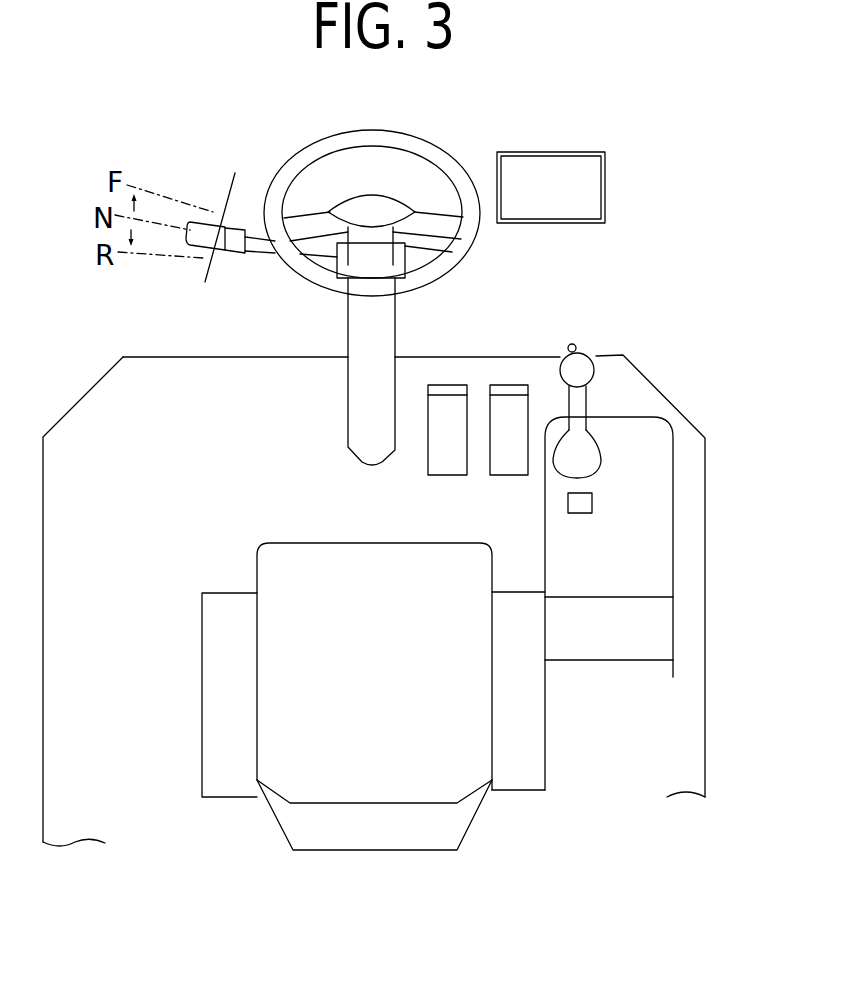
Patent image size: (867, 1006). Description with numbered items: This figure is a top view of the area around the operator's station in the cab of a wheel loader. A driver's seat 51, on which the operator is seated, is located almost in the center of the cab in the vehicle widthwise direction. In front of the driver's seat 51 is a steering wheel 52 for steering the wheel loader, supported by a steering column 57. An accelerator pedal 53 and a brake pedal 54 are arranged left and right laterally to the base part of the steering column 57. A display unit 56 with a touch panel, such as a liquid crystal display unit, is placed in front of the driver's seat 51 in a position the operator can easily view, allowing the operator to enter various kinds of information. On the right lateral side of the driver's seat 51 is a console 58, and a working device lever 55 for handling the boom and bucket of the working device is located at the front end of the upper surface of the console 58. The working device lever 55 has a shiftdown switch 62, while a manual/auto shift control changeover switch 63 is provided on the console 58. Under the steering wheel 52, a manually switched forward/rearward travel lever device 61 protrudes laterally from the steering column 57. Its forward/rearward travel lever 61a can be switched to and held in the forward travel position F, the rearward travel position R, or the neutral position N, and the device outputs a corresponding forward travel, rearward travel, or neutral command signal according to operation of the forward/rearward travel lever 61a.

The driver's seat 51 is at (303, 773).
The steering wheel 52 is at (443, 153).
The accelerator pedal 53 is at (503, 397).
The brake pedal 54 is at (440, 397).
The working device lever 55 is at (585, 350).
The display unit 56 is at (580, 152).
The steering column 57 is at (357, 328).
The console 58 is at (675, 567).
The forward/rearward travel lever device 61 is at (212, 204).
The forward/rearward travel lever 61a is at (258, 237).
The shiftdown switch 62 is at (571, 343).
The manual/auto shift control changeover switch 63 is at (595, 503).